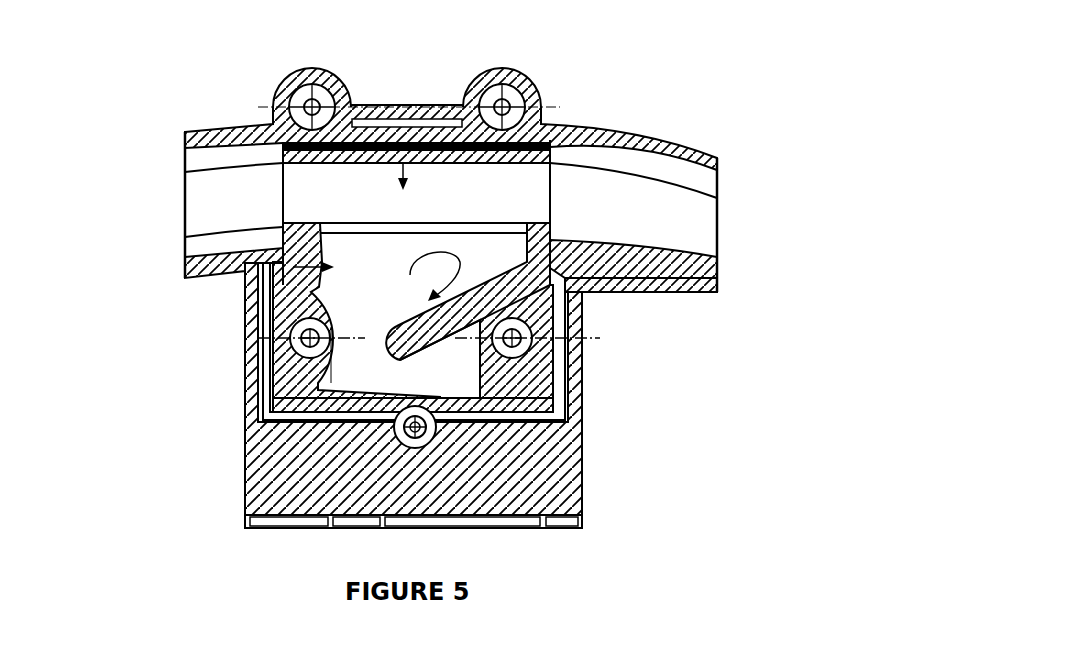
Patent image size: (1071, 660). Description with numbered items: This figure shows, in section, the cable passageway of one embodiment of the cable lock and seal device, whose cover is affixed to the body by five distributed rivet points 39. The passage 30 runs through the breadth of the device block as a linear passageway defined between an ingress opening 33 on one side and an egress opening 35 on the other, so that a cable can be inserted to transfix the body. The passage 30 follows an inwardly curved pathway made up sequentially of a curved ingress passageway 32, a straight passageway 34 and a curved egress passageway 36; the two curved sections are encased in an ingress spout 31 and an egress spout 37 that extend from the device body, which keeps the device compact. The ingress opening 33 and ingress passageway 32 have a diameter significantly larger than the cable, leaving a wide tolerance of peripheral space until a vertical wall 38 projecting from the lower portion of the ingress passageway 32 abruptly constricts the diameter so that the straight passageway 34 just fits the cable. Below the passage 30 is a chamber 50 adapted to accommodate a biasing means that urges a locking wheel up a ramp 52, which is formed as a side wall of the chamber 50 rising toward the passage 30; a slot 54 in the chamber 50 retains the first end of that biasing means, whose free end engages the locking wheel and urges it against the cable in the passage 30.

The passage 30 is at (378, 100).
The ingress spout 31 is at (718, 267).
The curved ingress passageway 32 is at (628, 215).
The ingress opening 33 is at (718, 228).
The straight passageway 34 is at (432, 100).
The egress opening 35 is at (183, 213).
The curved egress passageway 36 is at (240, 192).
The egress spout 37 is at (183, 272).
The vertical wall 38 is at (718, 284).
The rivet points 39 is at (317, 70).
The chamber 50 is at (245, 288).
The ramp 52 is at (545, 268).
The slot 54 is at (430, 395).